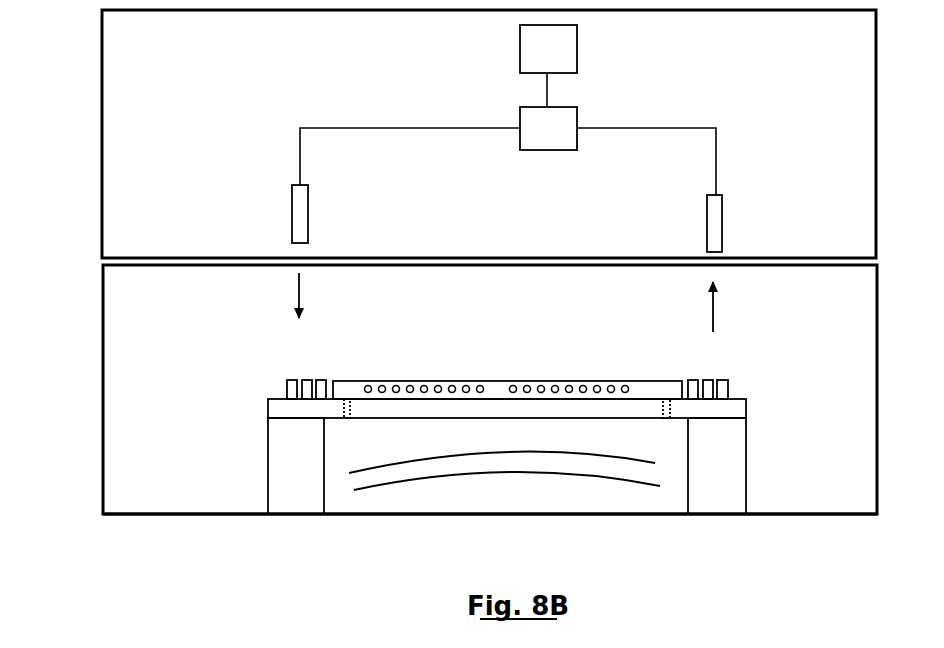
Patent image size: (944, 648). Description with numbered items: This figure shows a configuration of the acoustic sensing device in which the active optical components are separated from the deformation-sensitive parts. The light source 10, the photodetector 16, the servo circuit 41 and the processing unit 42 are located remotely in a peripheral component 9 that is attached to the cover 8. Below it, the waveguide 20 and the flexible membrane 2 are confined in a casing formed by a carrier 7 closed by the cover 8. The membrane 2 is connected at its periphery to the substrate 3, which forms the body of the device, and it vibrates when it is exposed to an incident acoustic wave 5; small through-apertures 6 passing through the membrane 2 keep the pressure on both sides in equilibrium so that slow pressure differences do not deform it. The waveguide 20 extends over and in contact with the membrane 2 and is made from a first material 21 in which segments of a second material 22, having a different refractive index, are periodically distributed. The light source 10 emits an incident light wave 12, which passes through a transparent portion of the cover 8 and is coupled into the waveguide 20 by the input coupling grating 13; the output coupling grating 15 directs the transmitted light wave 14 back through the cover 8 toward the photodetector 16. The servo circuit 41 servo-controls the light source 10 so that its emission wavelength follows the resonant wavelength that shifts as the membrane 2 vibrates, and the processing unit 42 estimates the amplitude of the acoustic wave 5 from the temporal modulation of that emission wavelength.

The flexible membrane 2 is at (642, 412).
The substrate 3 is at (298, 500).
The incident acoustic wave 5 is at (498, 475).
The through-apertures 6 is at (347, 420).
The carrier 7 is at (793, 514).
The cover 8 is at (103, 340).
The peripheral component 9 is at (102, 148).
The light source 10 is at (300, 205).
The incident light wave 12 is at (290, 302).
The input coupling grating 13 is at (307, 379).
The transmitted light wave 14 is at (719, 318).
The output coupling grating 15 is at (710, 379).
The photodetector 16 is at (707, 238).
The waveguide 20 is at (409, 382).
The first material 21 is at (614, 386).
The segments of second material 22 is at (500, 386).
The servo circuit 41 is at (527, 121).
The processing unit 42 is at (567, 47).